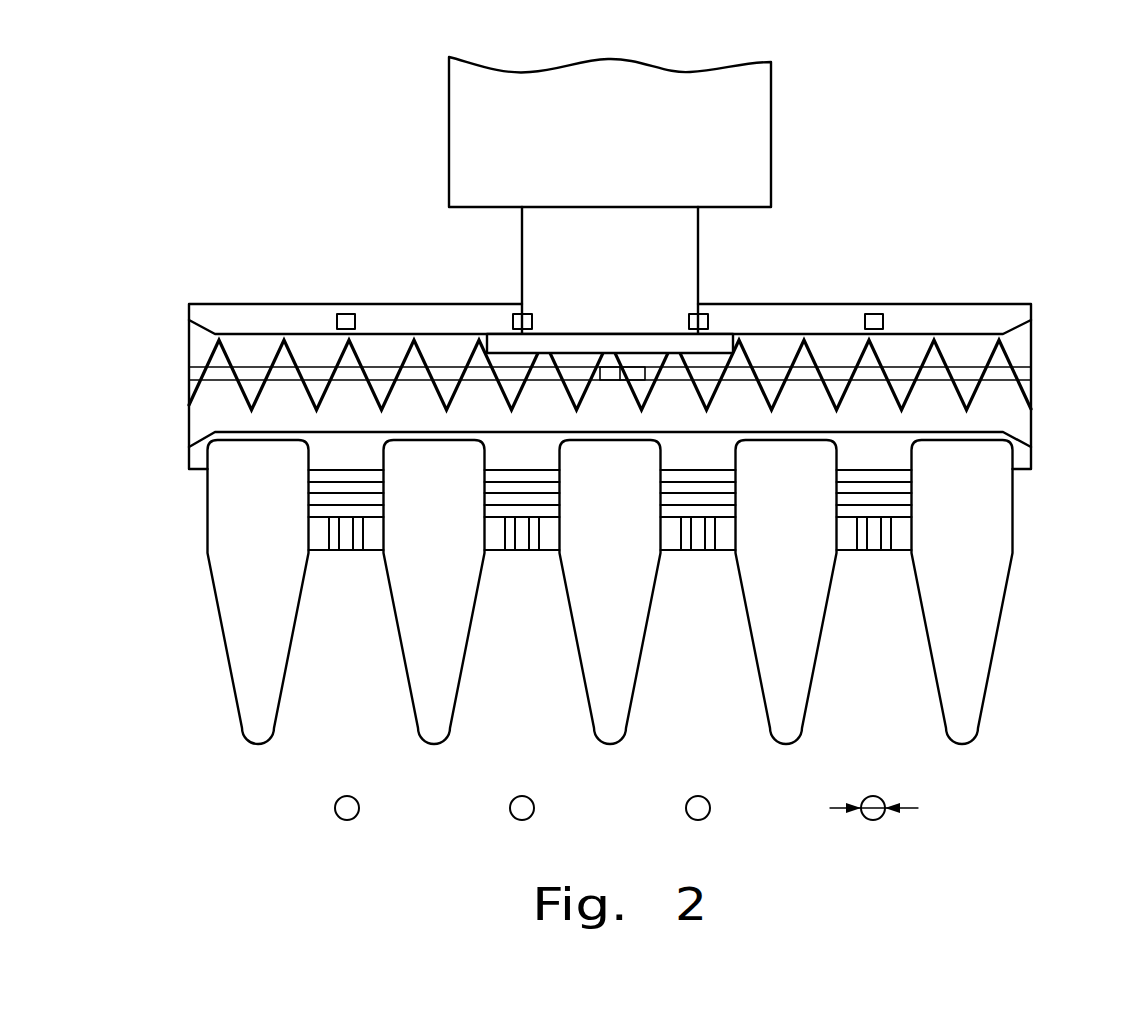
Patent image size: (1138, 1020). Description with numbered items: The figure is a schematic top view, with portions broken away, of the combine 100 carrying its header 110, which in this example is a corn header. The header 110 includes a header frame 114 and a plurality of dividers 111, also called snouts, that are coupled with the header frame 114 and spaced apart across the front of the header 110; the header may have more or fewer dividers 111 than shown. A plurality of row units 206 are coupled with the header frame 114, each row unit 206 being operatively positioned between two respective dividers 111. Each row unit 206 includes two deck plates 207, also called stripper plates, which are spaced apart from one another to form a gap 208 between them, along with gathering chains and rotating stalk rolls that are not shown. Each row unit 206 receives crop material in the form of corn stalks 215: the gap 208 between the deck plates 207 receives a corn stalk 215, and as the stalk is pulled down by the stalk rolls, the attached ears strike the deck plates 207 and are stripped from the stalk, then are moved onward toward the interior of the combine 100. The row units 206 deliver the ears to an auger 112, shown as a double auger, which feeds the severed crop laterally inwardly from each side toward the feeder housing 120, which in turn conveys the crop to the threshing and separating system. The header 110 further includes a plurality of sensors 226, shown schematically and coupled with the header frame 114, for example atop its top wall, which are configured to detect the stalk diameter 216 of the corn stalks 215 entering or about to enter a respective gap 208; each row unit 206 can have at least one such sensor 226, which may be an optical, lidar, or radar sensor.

The combine 100 is at (308, 78).
The header 110 is at (648, 320).
The dividers 111 is at (232, 679).
The auger 112 is at (316, 372).
The header frame 114 is at (226, 303).
The feeder housing 120 is at (522, 247).
The row units 206 is at (690, 476).
The deck plates 207 is at (368, 528).
The gap 208 is at (699, 549).
The corn stalks 215 is at (336, 800).
The stalk diameter 216 is at (878, 819).
The sensors 226 is at (513, 320).